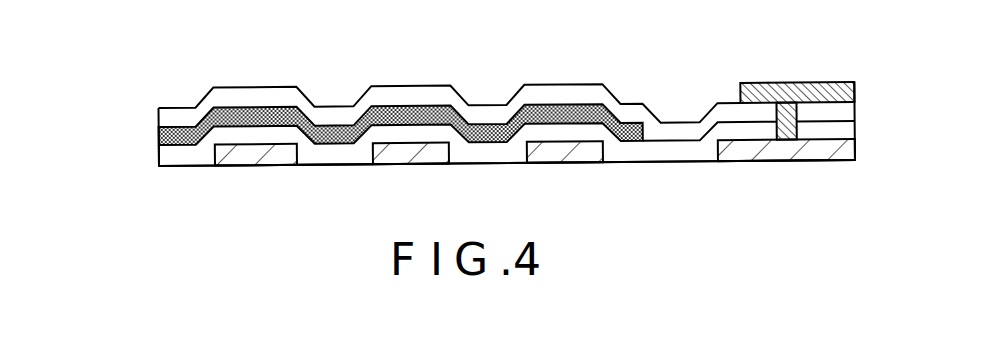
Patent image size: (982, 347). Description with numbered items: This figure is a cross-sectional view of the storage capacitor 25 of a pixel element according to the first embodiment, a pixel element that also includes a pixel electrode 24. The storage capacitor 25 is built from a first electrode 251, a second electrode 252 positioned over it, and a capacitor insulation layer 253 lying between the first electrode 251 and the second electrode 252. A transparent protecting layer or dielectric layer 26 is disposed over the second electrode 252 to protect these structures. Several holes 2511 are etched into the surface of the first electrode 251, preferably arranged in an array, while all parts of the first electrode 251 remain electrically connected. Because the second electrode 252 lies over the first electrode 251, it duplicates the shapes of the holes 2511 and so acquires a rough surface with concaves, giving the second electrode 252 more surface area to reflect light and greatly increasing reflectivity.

The pixel electrode 24 is at (809, 84).
The storage capacitor 25 is at (84, 135).
The first electrode 251 is at (228, 164).
The hole 2511 is at (331, 159).
The second electrode 252 is at (158, 134).
The capacitor insulation layer 253 is at (158, 157).
The transparent protecting layer or dielectric layer 26 is at (158, 121).